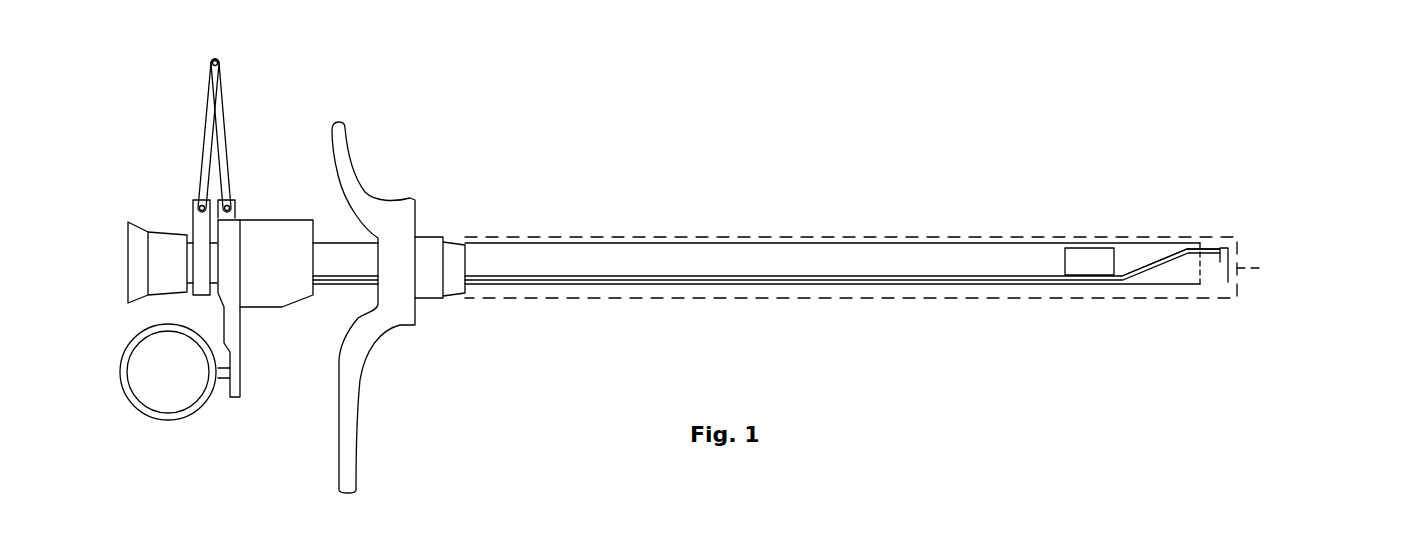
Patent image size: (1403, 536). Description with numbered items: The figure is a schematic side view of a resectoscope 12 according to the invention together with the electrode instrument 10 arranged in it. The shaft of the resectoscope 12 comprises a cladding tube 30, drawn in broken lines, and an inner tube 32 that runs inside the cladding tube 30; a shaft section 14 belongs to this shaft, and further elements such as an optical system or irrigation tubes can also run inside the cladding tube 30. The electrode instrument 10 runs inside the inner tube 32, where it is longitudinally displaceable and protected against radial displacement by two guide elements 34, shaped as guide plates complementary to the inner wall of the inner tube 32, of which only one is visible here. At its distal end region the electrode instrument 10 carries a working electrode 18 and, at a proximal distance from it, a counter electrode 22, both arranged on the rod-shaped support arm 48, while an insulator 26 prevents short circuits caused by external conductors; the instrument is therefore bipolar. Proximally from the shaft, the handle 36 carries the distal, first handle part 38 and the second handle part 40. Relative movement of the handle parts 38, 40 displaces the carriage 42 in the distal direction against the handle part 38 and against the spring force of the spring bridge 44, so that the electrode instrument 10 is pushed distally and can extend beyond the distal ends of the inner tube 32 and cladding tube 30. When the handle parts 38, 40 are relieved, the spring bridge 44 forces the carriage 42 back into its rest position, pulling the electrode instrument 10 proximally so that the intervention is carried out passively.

The electrode instrument 10 is at (1148, 271).
The resectoscope 12 is at (662, 181).
The shaft section 14 is at (742, 273).
The working electrode 18 is at (1262, 268).
The counter electrode 22 is at (1208, 252).
The insulator 26 is at (1221, 255).
The cladding tube 30 is at (956, 238).
The inner tube 32 is at (872, 255).
The guide elements 34 is at (1085, 263).
The handle 36 is at (218, 423).
The handle part 38 is at (362, 197).
The handle part 40 is at (125, 392).
The carriage 42 is at (255, 250).
The spring bridge 44 is at (210, 128).
The support arm 48 is at (1200, 265).